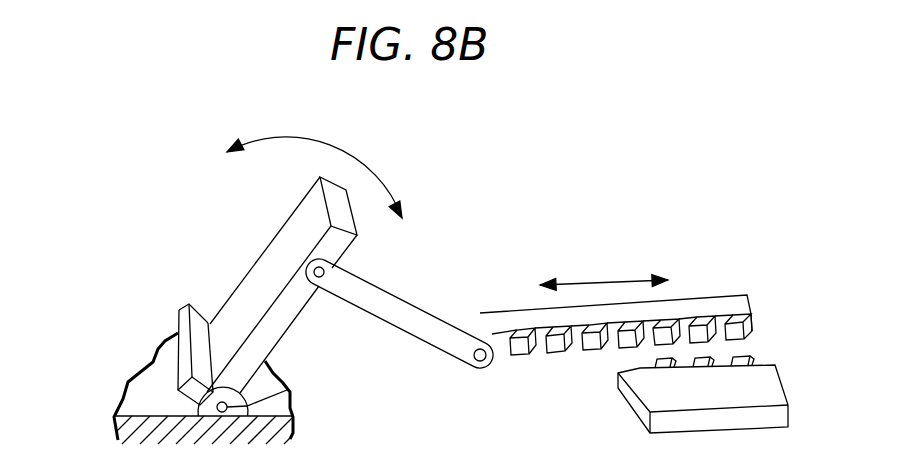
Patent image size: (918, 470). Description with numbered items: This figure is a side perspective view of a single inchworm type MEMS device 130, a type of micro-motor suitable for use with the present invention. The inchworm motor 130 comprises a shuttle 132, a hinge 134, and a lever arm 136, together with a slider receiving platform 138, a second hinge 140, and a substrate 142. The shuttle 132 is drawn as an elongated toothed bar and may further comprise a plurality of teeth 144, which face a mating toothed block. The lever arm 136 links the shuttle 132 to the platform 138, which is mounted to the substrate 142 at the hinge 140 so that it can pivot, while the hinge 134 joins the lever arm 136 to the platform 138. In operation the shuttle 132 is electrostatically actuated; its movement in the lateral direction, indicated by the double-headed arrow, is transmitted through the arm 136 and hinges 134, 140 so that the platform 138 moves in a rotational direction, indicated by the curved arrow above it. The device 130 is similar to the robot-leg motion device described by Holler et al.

The inchworm type MEMS device 130 is at (642, 206).
The shuttle 132 is at (693, 300).
The hinge 134 is at (305, 265).
The lever arm 136 is at (393, 310).
The slider receiving platform 138 is at (250, 288).
The hinge 140 is at (287, 391).
The substrate 142 is at (148, 390).
The teeth 144 is at (768, 347).